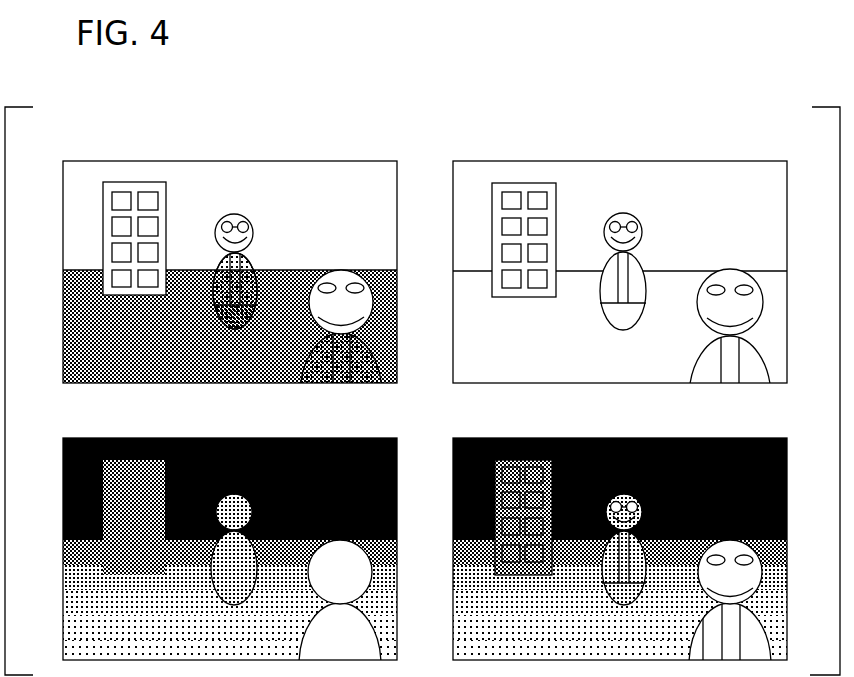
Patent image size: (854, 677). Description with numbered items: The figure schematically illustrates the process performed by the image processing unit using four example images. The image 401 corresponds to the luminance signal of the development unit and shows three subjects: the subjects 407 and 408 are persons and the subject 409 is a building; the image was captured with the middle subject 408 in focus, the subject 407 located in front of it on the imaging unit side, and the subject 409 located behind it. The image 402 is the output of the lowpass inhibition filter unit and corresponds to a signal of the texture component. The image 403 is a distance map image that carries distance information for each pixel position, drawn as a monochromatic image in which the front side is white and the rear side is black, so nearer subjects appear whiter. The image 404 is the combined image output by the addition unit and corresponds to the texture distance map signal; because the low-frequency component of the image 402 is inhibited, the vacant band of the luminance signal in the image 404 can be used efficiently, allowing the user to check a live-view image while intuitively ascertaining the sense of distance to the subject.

The image 401 is at (230, 288).
The image 402 is at (740, 161).
The distance map image 403 is at (347, 438).
The combined image 404 is at (738, 438).
The subject 407 is at (341, 363).
The subject 408 is at (252, 265).
The subject 409 is at (193, 197).